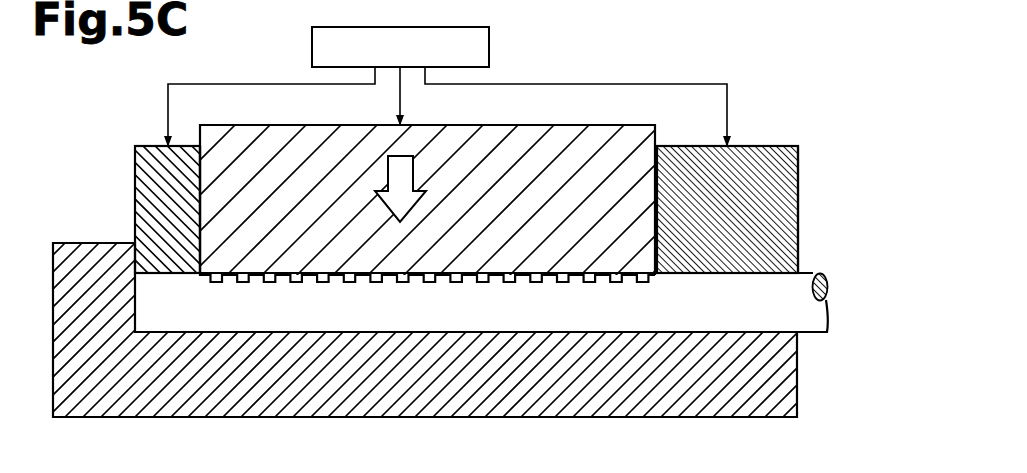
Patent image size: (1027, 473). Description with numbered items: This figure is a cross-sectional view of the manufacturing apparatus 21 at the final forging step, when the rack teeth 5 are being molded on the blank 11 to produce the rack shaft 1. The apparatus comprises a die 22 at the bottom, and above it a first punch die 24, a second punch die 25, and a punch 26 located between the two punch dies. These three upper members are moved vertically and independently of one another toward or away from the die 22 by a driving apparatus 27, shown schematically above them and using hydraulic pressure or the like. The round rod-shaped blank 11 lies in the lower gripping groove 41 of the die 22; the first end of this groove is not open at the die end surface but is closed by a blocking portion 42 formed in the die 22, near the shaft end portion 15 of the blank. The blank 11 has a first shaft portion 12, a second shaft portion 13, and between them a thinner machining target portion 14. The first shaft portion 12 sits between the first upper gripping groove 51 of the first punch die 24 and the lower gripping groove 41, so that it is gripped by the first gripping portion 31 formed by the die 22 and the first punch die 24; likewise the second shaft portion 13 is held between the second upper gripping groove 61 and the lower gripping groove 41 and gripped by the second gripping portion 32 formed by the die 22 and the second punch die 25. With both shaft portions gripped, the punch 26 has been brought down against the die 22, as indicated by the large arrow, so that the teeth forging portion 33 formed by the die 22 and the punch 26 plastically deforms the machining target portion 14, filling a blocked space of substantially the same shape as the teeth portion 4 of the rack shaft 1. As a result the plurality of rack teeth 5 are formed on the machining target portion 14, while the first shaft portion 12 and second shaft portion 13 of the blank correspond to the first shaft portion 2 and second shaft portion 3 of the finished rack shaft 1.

The rack shaft 1 is at (812, 334).
The first shaft portion 2 is at (162, 322).
The second shaft portion 3 is at (716, 334).
The teeth portion 4 is at (288, 326).
The rack teeth 5 is at (528, 275).
The blank 11 is at (486, 342).
The first shaft portion 12 is at (187, 346).
The second shaft portion 13 is at (723, 358).
The machining target portion 14 is at (445, 355).
The shaft end portion 15 is at (137, 313).
The manufacturing apparatus 21 is at (419, 154).
The die 22 is at (54, 362).
The first punch die 24 is at (146, 146).
The second punch die 25 is at (757, 146).
The punch 26 is at (580, 124).
The driving apparatus 27 is at (489, 47).
The first gripping portion 31 is at (480, 303).
The second gripping portion 32 is at (803, 220).
The teeth forging portion 33 is at (626, 110).
The lower gripping groove 41 is at (440, 322).
The blocking portion 42 is at (67, 308).
The first upper gripping groove 51 is at (168, 276).
The second upper gripping groove 61 is at (692, 272).